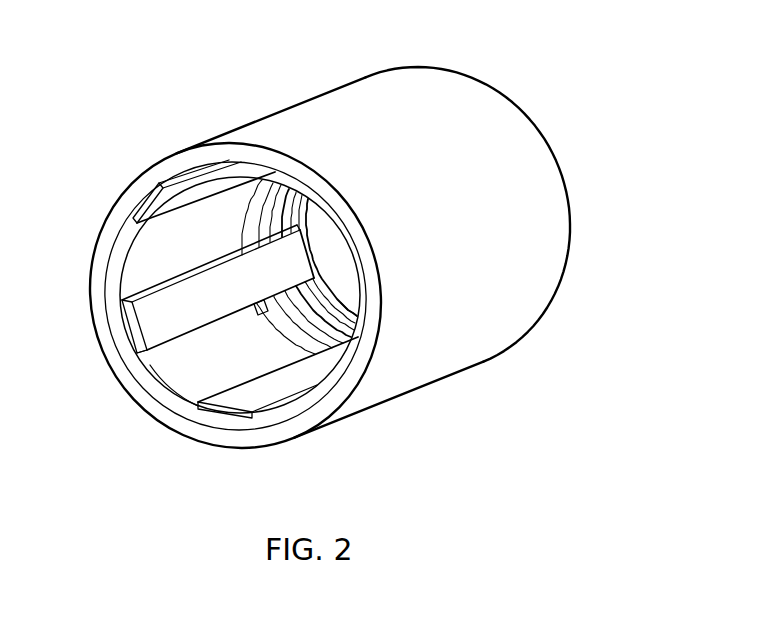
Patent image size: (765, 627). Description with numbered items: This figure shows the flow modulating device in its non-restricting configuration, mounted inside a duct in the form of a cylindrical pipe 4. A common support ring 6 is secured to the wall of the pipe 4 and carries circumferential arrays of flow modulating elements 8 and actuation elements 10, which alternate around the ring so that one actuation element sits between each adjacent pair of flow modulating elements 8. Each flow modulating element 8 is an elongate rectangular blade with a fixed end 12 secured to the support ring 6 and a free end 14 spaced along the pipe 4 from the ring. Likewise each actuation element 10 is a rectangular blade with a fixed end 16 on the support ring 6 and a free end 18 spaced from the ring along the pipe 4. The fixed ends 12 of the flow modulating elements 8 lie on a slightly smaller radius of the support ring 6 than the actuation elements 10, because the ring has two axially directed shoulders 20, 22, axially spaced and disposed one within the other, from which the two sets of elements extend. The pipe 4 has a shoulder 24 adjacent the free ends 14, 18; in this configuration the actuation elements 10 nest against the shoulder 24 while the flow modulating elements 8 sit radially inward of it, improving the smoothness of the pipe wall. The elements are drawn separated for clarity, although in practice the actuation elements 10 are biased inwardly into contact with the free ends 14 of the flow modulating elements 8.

The cylindrical pipe 4 is at (432, 82).
The common support ring 6 is at (284, 210).
The flow modulating elements 8 is at (150, 200).
The actuation elements 10 is at (127, 357).
The fixed end 12 is at (265, 270).
The free end 14 is at (137, 345).
The fixed end 16 is at (270, 348).
The free end 18 is at (188, 407).
The axially directed shoulder 20 is at (343, 340).
The axially directed shoulder 22 is at (266, 308).
The shoulder 24 is at (125, 357).